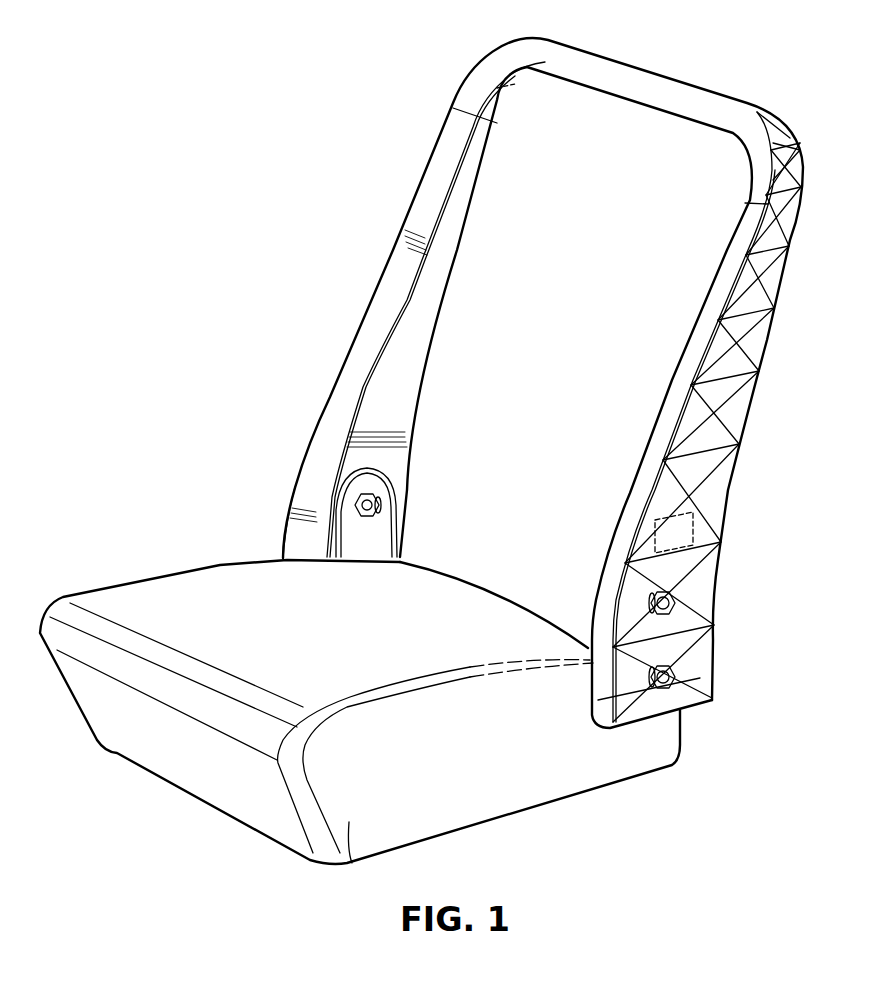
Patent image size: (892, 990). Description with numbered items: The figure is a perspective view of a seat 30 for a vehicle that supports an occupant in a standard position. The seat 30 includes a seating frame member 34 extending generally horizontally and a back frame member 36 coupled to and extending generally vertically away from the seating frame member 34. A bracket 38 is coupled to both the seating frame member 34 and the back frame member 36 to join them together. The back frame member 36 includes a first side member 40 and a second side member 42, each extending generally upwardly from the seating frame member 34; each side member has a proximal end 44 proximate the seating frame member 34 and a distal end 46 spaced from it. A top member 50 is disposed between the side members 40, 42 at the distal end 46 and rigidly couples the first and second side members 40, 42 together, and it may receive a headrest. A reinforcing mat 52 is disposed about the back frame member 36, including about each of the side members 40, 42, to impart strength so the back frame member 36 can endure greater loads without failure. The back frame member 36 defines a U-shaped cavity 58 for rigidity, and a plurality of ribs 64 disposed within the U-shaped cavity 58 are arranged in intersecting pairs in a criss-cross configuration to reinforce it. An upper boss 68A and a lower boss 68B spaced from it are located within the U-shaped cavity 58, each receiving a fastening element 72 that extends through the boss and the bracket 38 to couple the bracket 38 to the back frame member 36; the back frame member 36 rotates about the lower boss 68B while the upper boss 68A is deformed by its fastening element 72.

The seat 30 is at (399, 725).
The seating frame member 34 is at (350, 873).
The back frame member 36 is at (542, 367).
The bracket 38 is at (345, 538).
The first side member 40 is at (694, 422).
The second side member 42 is at (390, 220).
The proximal end 44 is at (717, 685).
The distal end 46 is at (810, 197).
The top member 50 is at (621, 72).
The reinforcing mat 52 is at (407, 388).
The U-shaped cavity 58 is at (677, 547).
The ribs 64 is at (680, 437).
The upper boss 68A is at (633, 597).
The lower boss 68B is at (630, 672).
The fastening element 72 is at (673, 603).